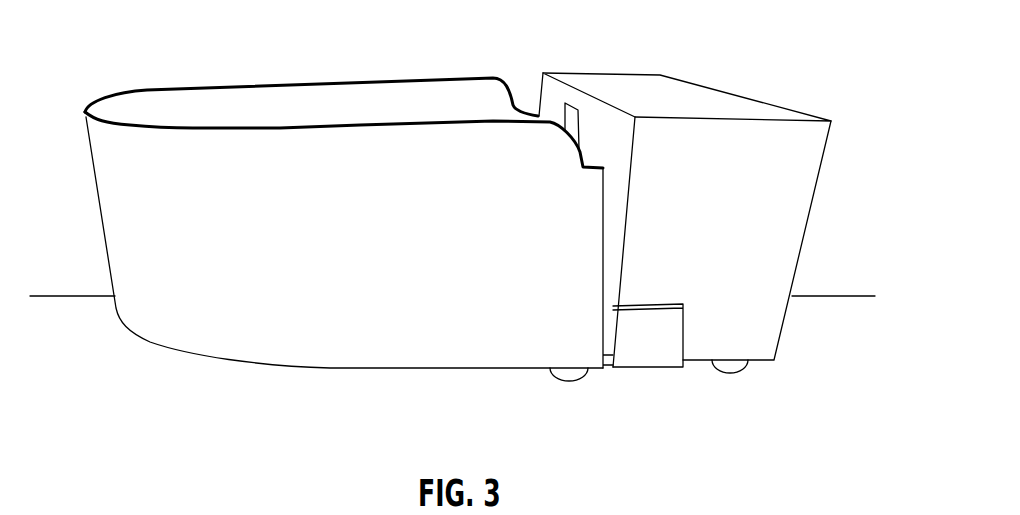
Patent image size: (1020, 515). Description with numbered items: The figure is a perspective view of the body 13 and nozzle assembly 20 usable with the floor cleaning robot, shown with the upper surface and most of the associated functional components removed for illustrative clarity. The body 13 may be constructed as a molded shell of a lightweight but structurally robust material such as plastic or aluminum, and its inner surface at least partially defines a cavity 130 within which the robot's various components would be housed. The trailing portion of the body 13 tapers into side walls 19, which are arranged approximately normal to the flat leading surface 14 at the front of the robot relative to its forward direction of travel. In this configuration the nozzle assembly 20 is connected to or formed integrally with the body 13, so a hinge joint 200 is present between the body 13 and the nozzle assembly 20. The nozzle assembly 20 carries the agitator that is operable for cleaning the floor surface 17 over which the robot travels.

The body 13 is at (341, 95).
The cavity 130 is at (268, 109).
The hinge joint 200 is at (524, 93).
The nozzle assembly 20 is at (770, 64).
The leading surface 14 is at (780, 342).
The floor surface 17 is at (107, 310).
The side walls 19 is at (379, 249).